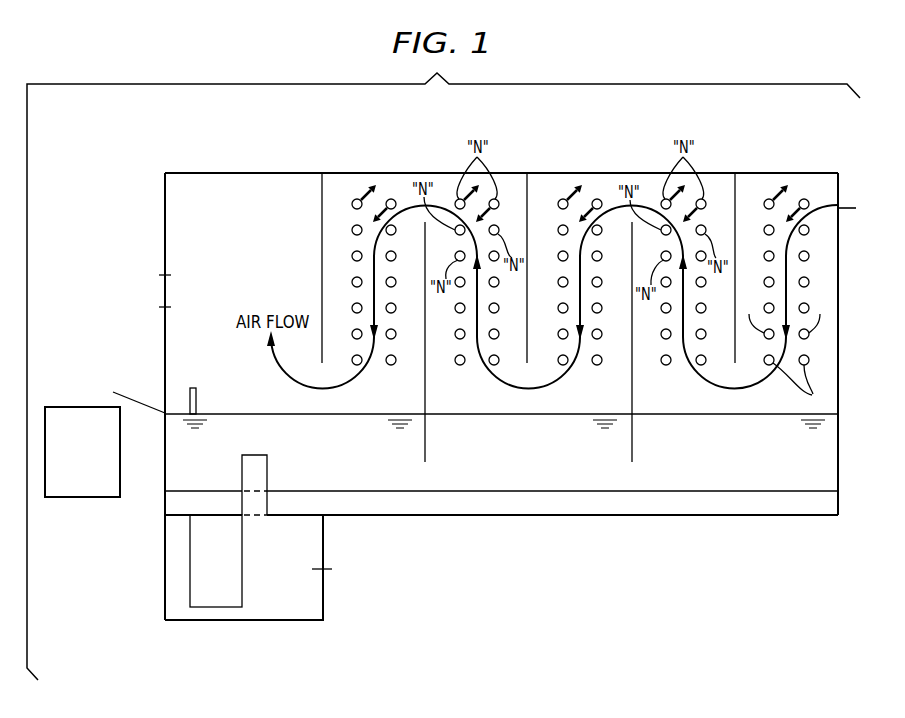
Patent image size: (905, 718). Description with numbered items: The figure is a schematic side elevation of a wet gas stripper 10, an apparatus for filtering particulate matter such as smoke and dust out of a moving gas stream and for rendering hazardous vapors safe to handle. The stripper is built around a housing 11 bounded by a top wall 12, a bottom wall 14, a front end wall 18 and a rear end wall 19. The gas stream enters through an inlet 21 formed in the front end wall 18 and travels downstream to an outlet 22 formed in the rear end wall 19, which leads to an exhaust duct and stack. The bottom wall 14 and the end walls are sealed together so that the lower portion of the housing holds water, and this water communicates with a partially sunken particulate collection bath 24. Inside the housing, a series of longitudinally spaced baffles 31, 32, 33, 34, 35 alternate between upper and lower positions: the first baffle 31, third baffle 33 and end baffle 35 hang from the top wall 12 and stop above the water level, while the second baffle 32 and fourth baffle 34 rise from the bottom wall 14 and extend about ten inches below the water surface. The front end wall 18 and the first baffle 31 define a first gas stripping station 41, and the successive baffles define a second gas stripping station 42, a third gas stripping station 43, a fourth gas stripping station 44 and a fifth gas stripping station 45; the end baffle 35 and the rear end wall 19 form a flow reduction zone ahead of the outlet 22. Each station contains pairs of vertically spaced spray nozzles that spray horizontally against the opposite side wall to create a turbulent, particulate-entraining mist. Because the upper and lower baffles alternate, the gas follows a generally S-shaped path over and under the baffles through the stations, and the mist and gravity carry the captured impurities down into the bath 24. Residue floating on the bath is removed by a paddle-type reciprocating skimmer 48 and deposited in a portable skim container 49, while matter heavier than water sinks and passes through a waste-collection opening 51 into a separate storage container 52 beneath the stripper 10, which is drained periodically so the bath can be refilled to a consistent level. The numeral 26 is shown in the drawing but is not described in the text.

The wet gas stripper 10 is at (90, 231).
The housing 11 is at (165, 206).
The top wall 12 is at (243, 172).
The bottom wall 14 is at (573, 493).
The front end wall 18 is at (838, 471).
The rear end wall 19 is at (162, 332).
The inlet 21 is at (838, 207).
The outlet 22 is at (162, 292).
The particulate collection bath 24 is at (467, 505).
The air outlet 26 is at (206, 176).
The first baffle 31 is at (735, 188).
The second baffle 32 is at (632, 400).
The third baffle 33 is at (527, 188).
The fourth baffle 34 is at (425, 400).
The end baffle 35 is at (322, 212).
The first gas stripping station 41 is at (781, 176).
The second gas stripping station 42 is at (678, 413).
The third gas stripping station 43 is at (575, 176).
The fourth gas stripping station 44 is at (473, 413).
The fifth gas stripping station 45 is at (366, 176).
The skimmer 48 is at (188, 405).
The portable skim container 49 is at (83, 407).
The waste-collection opening 51 is at (203, 514).
The storage container 52 is at (278, 620).